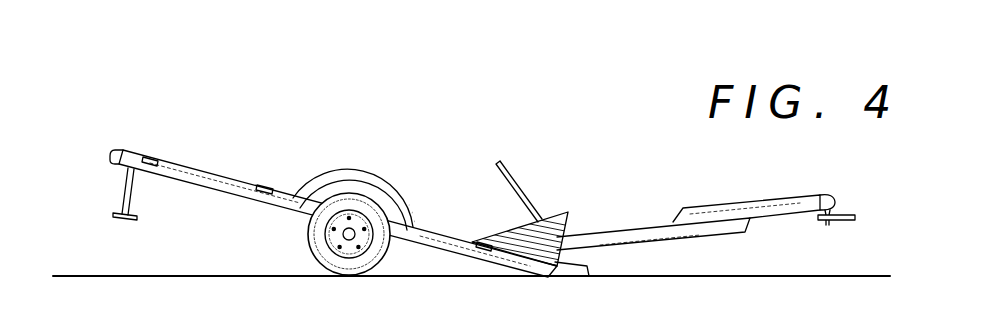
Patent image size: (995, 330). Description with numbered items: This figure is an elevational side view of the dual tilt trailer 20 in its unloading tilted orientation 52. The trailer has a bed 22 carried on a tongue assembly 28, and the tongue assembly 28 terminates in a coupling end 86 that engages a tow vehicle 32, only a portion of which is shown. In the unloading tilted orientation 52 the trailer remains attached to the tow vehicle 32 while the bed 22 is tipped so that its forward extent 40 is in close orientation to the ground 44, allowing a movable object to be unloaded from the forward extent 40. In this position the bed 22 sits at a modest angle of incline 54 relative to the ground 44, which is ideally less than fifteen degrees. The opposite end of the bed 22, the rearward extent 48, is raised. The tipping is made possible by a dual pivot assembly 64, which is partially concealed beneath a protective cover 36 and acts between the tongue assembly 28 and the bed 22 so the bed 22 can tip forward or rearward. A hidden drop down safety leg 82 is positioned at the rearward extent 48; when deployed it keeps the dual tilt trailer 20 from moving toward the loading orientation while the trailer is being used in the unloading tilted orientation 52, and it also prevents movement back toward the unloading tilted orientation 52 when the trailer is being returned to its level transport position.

The dual tilt trailer 20 is at (166, 56).
The bed 22 is at (214, 172).
The tongue assembly 28 is at (738, 205).
The tow vehicle 32 is at (847, 222).
The protective cover 36 is at (559, 212).
The forward extent 40 is at (556, 273).
The ground 44 is at (747, 276).
The rearward extent 48 is at (122, 148).
The unloading tilted orientation 52 is at (442, 75).
The angle of incline 54 is at (510, 112).
The dual pivot assembly 64 is at (507, 228).
The hidden drop down safety leg 82 is at (129, 187).
The coupling end 86 is at (828, 197).